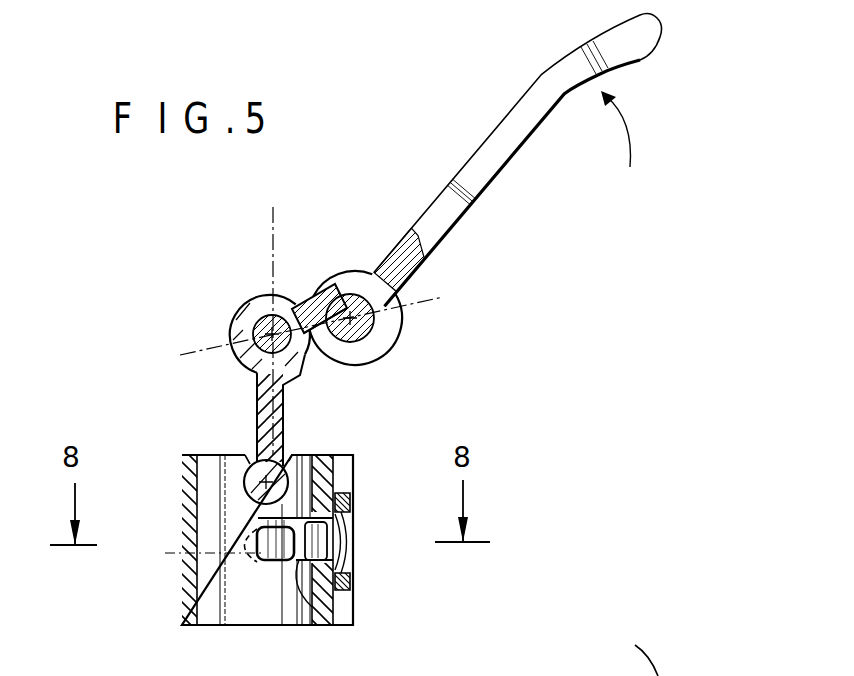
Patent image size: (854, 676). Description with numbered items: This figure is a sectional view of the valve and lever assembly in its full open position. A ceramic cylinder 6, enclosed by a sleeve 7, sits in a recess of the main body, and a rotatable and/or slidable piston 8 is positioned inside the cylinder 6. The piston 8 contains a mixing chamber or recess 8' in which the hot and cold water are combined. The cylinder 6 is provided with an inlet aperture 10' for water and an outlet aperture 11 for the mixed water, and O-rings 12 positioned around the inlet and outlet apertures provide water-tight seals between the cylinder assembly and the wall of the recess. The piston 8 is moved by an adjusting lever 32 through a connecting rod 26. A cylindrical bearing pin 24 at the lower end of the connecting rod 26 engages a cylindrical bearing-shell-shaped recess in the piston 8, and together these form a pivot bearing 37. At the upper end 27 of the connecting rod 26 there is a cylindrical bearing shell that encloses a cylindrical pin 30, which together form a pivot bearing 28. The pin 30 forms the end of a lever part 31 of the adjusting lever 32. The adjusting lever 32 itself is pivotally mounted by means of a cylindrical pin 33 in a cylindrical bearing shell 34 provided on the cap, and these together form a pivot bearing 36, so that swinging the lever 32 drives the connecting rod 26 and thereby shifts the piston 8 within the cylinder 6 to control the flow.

The ceramic cylinder 6 is at (213, 613).
The sleeve 7 is at (183, 582).
The piston 8 is at (271, 583).
The mixing chamber 8' is at (346, 599).
The inlet aperture 10' is at (194, 548).
The outlet aperture 11 is at (317, 542).
The O-rings 12 is at (352, 508).
The cylindrical bearing pin 24 is at (244, 464).
The connecting rod 26 is at (284, 440).
The upper end of the connecting rod 27 is at (242, 306).
The pivot bearing 28 is at (305, 303).
The cylindrical pin 30 is at (242, 368).
The lever part 31 is at (312, 345).
The adjusting lever 32 is at (510, 133).
The cylindrical pin 33 is at (382, 346).
The cylindrical bearing shell 34 is at (400, 322).
The pivot bearing 36 is at (366, 260).
The pivot bearing 37 is at (292, 449).